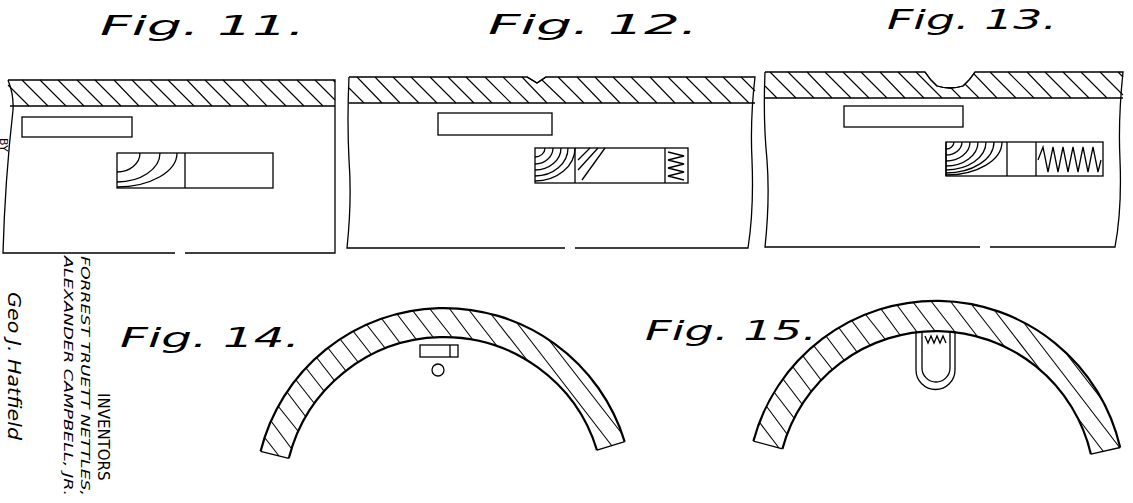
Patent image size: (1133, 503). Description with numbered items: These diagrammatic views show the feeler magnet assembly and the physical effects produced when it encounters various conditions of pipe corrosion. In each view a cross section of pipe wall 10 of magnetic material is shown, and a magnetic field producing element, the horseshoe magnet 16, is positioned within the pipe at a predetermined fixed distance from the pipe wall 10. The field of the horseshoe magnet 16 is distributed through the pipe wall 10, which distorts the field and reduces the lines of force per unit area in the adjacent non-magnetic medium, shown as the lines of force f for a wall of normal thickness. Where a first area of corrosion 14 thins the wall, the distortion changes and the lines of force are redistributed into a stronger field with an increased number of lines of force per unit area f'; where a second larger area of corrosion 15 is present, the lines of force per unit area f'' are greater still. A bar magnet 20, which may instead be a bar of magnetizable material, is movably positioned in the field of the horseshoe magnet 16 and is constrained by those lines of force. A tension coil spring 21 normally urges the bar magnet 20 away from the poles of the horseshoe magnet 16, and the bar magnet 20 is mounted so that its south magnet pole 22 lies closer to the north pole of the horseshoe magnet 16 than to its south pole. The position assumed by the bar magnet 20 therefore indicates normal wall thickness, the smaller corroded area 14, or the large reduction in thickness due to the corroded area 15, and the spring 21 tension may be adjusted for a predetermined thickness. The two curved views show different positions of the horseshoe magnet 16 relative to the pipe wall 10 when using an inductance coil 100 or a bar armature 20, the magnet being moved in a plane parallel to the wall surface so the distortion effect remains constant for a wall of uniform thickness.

In FIG. 11, the pipe wall 10 is at (89, 86).
In FIG. 12, the pipe wall 10 is at (445, 78).
In FIG. 13, the pipe wall 10 is at (850, 67).
In FIG. 14, the pipe wall 10 is at (541, 340).
In FIG. 15, the pipe wall 10 is at (1040, 318).
In FIG. 12, the first area of corrosion 14 is at (541, 79).
In FIG. 13, the second larger area of corrosion 15 is at (962, 76).
In FIG. 11, the horseshoe magnet 16 is at (60, 130).
In FIG. 12, the horseshoe magnet 16 is at (456, 128).
In FIG. 13, the horseshoe magnet 16 is at (862, 122).
In FIG. 14, the horseshoe magnet 16 is at (459, 352).
In FIG. 15, the horseshoe magnet 16 is at (956, 375).
In FIG. 11, the bar magnet 20 is at (235, 180).
In FIG. 13, the bar magnet 20 is at (1017, 173).
In FIG. 14, the bar magnet 20 is at (445, 371).
In FIG. 12, the tension coil spring 21 is at (680, 181).
In FIG. 13, the tension coil spring 21 is at (1075, 173).
In FIG. 12, the south magnet pole 22 is at (590, 181).
In FIG. 13, the south magnet pole 22 is at (950, 178).
In FIG. 15, the inductance coil 100 is at (926, 346).
In FIG. 11, the lines of force f is at (147, 153).
In FIG. 12, the lines of force per unit area f' is at (562, 150).
In FIG. 13, the lines of force per unit area f'' is at (911, 165).